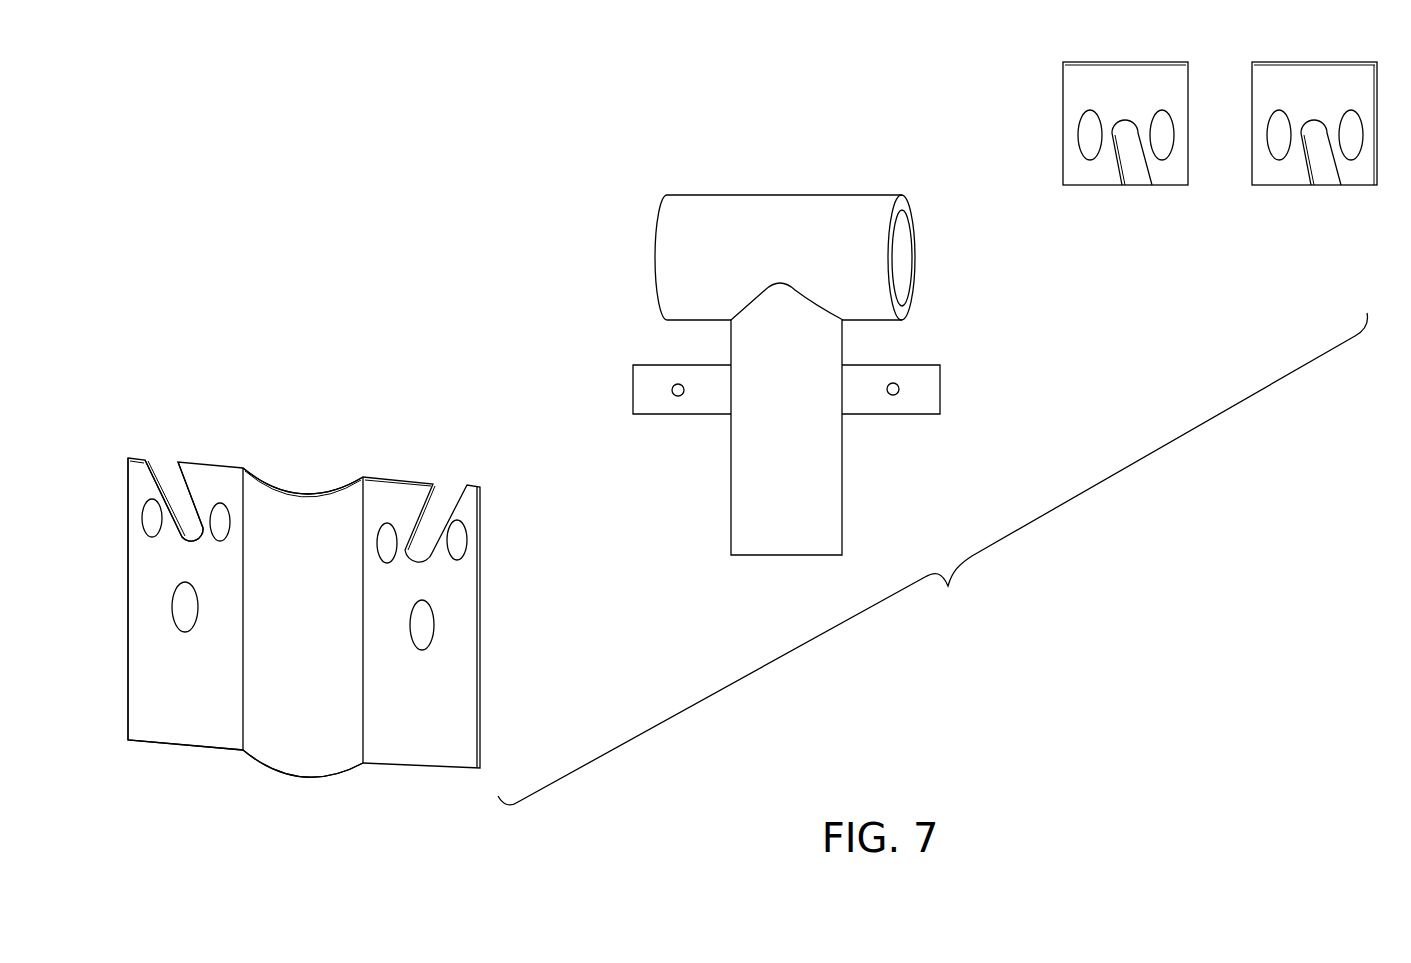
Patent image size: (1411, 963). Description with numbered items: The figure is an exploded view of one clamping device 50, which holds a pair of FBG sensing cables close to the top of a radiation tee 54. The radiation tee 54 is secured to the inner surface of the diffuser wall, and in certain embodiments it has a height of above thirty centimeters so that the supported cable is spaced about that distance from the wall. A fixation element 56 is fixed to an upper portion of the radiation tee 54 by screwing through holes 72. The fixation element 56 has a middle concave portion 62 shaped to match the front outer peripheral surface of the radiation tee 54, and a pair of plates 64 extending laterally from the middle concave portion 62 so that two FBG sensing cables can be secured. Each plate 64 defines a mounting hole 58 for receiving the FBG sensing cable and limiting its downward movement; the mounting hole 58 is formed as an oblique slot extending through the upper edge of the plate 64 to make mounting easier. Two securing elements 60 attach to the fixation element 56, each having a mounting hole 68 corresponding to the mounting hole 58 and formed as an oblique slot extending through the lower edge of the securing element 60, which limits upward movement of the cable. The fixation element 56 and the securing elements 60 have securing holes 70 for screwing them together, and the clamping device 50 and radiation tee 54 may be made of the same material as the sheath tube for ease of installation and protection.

The clamping device 50 is at (933, 559).
The radiation tee 54 is at (687, 172).
The fixation element 56 is at (483, 433).
The mounting hole 58 is at (167, 463).
The securing element 60 is at (1219, 126).
The middle concave portion 62 is at (303, 517).
The plate 64 is at (188, 652).
The mounting hole 68 is at (1133, 177).
The securing hole 70 is at (460, 545).
The hole 72 is at (424, 627).